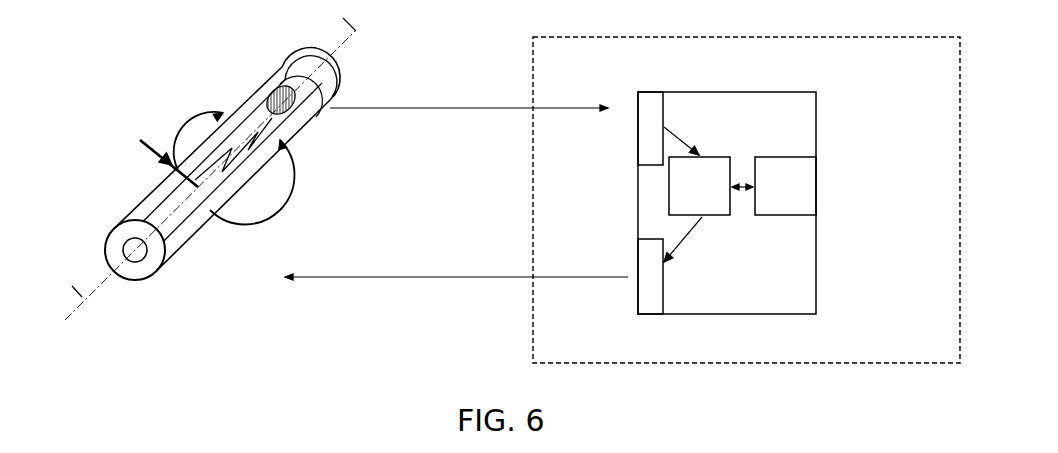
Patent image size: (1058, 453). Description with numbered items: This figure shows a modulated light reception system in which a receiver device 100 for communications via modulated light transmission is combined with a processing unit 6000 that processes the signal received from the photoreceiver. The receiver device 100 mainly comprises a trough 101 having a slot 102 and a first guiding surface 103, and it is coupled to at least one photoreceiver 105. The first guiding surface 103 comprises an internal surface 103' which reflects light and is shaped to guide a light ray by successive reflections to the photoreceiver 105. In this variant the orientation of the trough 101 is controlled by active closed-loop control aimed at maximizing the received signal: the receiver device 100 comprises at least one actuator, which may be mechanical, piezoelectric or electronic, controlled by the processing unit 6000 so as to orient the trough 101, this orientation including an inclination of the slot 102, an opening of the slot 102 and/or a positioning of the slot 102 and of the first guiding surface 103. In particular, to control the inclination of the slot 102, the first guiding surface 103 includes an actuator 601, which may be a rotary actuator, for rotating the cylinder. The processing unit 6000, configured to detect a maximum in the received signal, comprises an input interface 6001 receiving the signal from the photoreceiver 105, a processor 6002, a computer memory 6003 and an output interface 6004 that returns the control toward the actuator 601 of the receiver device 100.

The receiver device 100 is at (199, 169).
The trough 101 is at (200, 140).
The slot 102 is at (146, 221).
The first guiding surface 103 is at (243, 184).
The internal surface 103' is at (232, 168).
The photoreceiver 105 is at (278, 98).
The actuator 601 is at (137, 258).
The processing unit 6000 is at (889, 366).
The input interface INP 6001 is at (652, 90).
The processor PROC 6002 is at (716, 156).
The computer memory MEM 6003 is at (786, 217).
The output interface OUTP 6004 is at (652, 316).